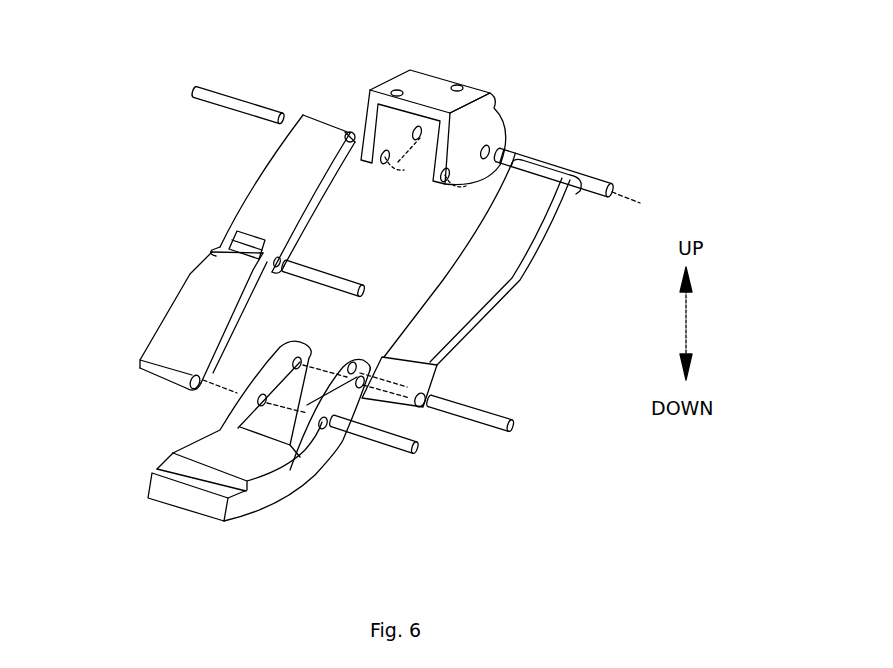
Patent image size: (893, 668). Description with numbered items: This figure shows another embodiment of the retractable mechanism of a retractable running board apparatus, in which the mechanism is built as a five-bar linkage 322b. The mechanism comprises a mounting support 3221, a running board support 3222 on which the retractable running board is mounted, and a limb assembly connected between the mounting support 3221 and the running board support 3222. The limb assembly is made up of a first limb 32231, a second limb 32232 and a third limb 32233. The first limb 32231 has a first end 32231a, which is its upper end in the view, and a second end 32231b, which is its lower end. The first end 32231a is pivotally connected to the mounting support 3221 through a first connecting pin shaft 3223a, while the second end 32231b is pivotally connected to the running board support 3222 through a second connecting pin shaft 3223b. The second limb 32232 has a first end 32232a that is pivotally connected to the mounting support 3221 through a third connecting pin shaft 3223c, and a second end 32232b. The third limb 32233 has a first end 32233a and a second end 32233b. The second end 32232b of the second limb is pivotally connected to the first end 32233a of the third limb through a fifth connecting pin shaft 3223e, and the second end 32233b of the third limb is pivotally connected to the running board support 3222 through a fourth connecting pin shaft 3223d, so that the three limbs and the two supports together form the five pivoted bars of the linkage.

The five-bar linkage 322b is at (686, 30).
The mounting support 3221 is at (399, 72).
The running board support 3222 is at (253, 503).
The first limb 32231 is at (523, 249).
The first end of the first limb 32231a is at (553, 160).
The second end of the first limb 32231b is at (423, 400).
The second limb 32232 is at (230, 168).
The first end of the second limb 32232a is at (300, 113).
The second end of the second limb 32232b is at (162, 214).
The third limb 32233 is at (177, 321).
The first end of the third limb 32233a is at (213, 243).
The second end of the third limb 32233b is at (172, 378).
The first connecting pin shaft 3223a is at (610, 182).
The second connecting pin shaft 3223b is at (473, 430).
The third connecting pin shaft 3223c is at (255, 107).
The fourth connecting pin shaft 3223d is at (377, 448).
The fifth connecting pin shaft 3223e is at (330, 265).